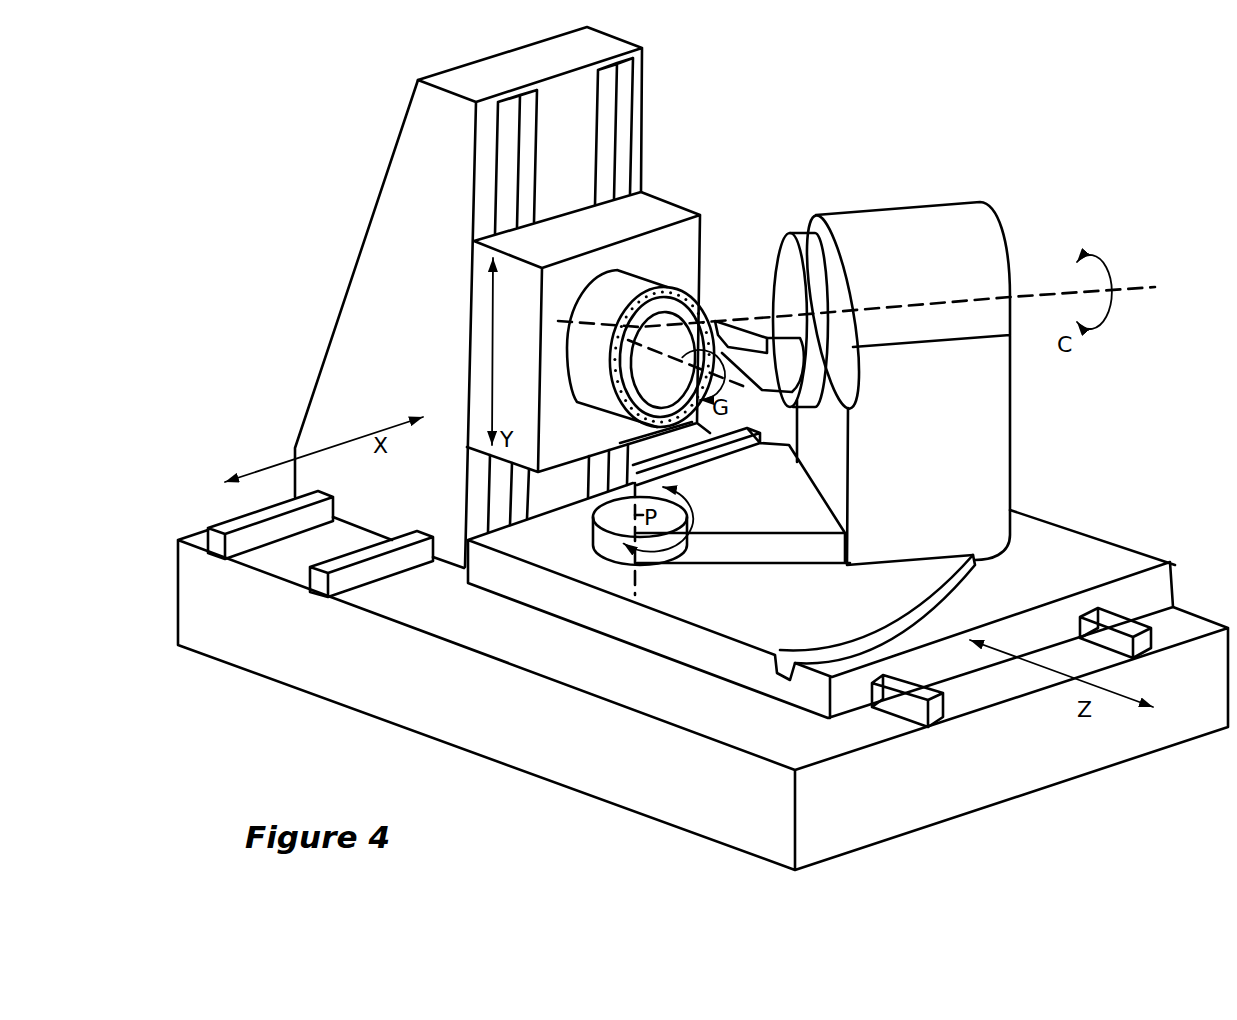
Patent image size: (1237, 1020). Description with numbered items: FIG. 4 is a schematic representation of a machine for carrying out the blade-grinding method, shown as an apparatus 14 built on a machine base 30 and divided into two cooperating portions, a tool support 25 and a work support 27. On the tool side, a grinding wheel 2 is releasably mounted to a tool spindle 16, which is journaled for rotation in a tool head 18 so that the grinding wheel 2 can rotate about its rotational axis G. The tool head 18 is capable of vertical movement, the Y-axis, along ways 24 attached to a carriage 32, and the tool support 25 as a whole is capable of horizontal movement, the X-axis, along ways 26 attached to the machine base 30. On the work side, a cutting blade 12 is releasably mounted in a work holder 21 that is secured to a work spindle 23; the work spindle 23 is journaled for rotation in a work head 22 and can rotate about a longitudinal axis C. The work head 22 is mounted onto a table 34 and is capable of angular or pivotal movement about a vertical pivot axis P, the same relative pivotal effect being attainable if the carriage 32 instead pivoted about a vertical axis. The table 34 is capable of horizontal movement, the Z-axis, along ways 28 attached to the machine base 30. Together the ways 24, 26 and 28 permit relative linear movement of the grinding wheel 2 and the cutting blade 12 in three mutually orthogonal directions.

The grinding wheel 2 is at (702, 300).
The cutting blade 12 is at (724, 321).
The apparatus 14 is at (727, 163).
The tool spindle 16 is at (617, 290).
The tool head 18 is at (680, 233).
The work holder 21 is at (782, 373).
The work head 22 is at (978, 242).
The work spindle 23 is at (792, 265).
The ways 24 is at (622, 133).
The tool support 25 is at (343, 242).
The ways 26 is at (243, 515).
The work support 27 is at (1000, 200).
The ways 28 is at (913, 710).
The machine base 30 is at (410, 703).
The carriage 32 is at (420, 173).
The table 34 is at (1093, 550).